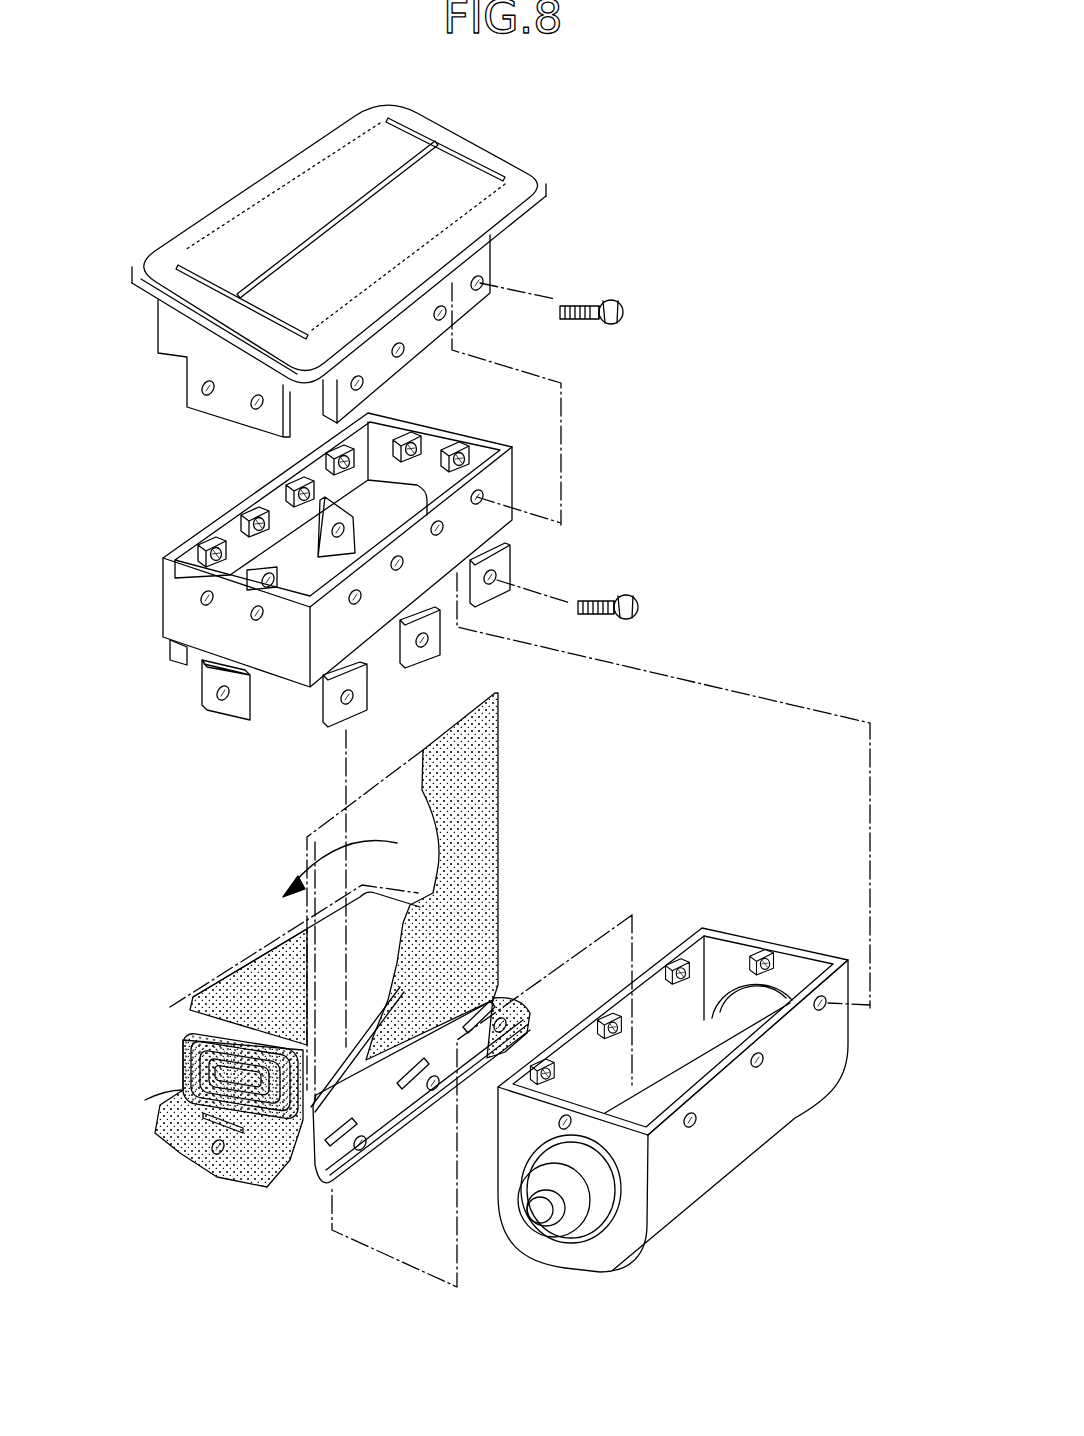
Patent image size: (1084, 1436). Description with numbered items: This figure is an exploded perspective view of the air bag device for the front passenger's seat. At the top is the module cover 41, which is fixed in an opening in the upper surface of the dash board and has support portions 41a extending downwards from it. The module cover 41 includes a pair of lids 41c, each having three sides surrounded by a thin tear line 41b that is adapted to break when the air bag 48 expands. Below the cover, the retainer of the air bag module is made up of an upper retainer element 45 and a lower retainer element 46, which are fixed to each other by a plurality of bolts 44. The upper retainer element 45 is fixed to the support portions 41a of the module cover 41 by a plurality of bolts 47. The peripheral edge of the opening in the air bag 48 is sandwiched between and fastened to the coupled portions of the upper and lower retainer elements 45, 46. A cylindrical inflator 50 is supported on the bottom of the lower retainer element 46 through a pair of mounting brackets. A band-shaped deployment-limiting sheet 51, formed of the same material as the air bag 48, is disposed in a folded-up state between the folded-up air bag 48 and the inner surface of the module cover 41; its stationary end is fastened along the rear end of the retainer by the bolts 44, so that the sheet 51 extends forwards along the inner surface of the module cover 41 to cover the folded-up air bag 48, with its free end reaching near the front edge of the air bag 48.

The module cover 41 is at (384, 278).
The support portions 41a is at (413, 340).
The tear line 41b is at (457, 145).
The lids 41c is at (312, 202).
The bolts 44 is at (638, 607).
The upper retainer element 45 is at (277, 657).
The lower retainer element 46 is at (673, 1067).
The bolts 47 is at (623, 310).
The air bag 48 is at (180, 1047).
The cylindrical inflator 50 is at (677, 1073).
The deployment-limiting sheet 51 is at (487, 793).